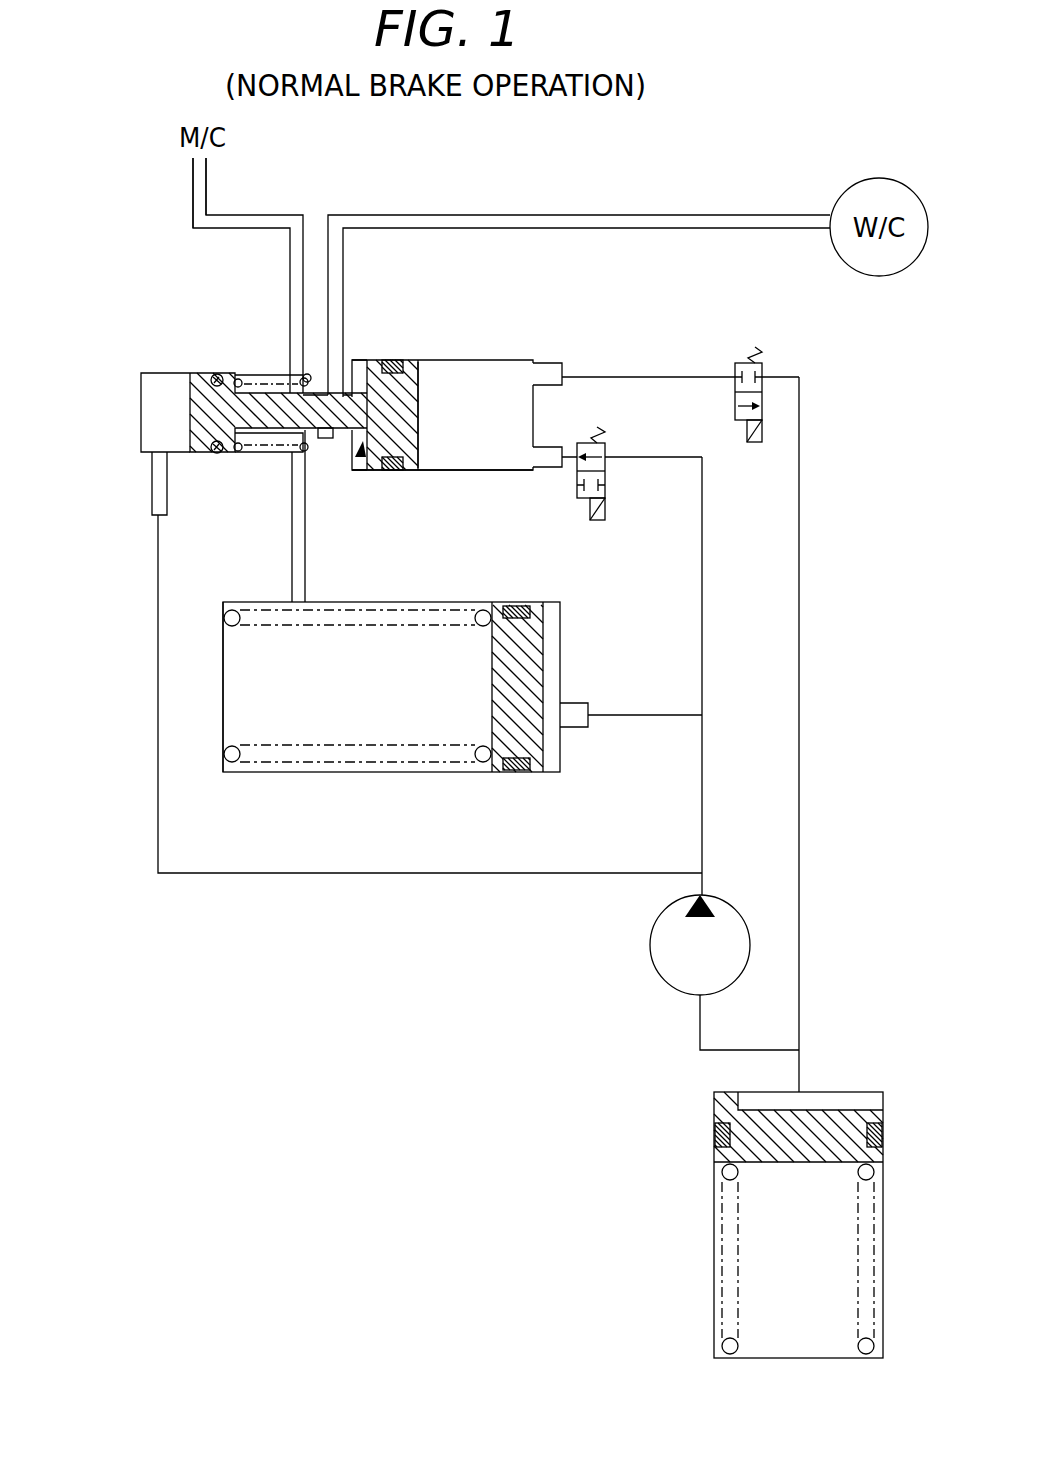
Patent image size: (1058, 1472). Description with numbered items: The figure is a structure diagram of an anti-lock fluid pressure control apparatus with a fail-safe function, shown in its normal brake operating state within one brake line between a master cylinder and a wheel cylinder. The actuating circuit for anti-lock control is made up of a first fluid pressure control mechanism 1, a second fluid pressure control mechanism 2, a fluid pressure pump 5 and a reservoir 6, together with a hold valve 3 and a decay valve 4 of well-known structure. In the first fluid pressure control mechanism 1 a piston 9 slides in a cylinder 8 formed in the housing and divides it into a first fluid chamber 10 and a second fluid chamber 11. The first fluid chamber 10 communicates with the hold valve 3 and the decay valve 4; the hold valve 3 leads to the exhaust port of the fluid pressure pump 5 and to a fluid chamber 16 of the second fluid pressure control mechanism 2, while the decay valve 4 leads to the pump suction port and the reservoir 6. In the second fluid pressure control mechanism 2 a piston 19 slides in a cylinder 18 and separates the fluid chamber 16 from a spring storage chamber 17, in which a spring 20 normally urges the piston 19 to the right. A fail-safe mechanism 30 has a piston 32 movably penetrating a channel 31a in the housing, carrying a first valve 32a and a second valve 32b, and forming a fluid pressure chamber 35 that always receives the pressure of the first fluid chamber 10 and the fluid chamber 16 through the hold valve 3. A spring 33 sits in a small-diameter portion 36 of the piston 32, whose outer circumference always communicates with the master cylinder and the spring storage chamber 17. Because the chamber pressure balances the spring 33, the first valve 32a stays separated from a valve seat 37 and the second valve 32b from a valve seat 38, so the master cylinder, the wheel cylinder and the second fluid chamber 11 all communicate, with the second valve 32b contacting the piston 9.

The first fluid pressure control mechanism 1 is at (472, 492).
The second fluid pressure control mechanism 2 is at (329, 800).
The hold valve 3 is at (600, 522).
The decay valve 4 is at (757, 444).
The fluid pressure pump 5 is at (672, 974).
The reservoir 6 is at (713, 1258).
The cylinder 8 is at (466, 358).
The piston 9 is at (412, 419).
The first fluid chamber 10 is at (510, 376).
The second fluid chamber 11 is at (357, 377).
The fluid chamber 16 is at (553, 650).
The spring storage chamber 17 is at (259, 738).
The cylinder 18 is at (468, 601).
The piston 19 is at (496, 688).
The spring 20 is at (423, 758).
The fail-safe mechanism 30 is at (168, 322).
The channel 31a is at (329, 440).
The piston 32 is at (192, 408).
The first valve 32a is at (305, 375).
The second valve 32b is at (365, 467).
The spring 33 is at (268, 380).
The fluid pressure chamber 35 is at (142, 440).
The small-diameter portion 36 is at (249, 448).
The valve seat 37 is at (303, 455).
The valve seat 38 is at (358, 456).